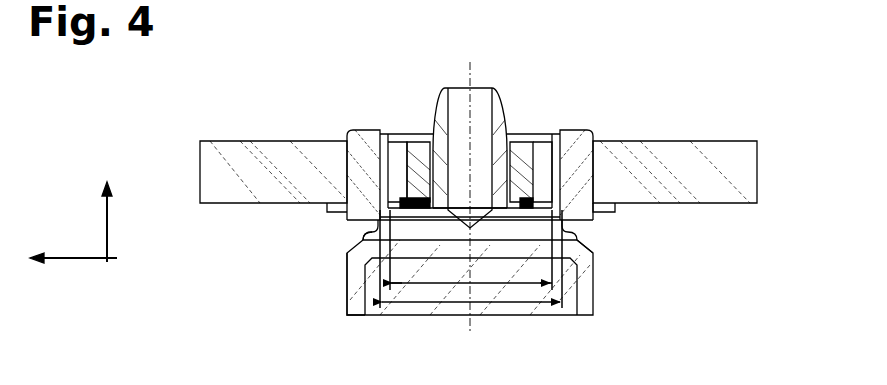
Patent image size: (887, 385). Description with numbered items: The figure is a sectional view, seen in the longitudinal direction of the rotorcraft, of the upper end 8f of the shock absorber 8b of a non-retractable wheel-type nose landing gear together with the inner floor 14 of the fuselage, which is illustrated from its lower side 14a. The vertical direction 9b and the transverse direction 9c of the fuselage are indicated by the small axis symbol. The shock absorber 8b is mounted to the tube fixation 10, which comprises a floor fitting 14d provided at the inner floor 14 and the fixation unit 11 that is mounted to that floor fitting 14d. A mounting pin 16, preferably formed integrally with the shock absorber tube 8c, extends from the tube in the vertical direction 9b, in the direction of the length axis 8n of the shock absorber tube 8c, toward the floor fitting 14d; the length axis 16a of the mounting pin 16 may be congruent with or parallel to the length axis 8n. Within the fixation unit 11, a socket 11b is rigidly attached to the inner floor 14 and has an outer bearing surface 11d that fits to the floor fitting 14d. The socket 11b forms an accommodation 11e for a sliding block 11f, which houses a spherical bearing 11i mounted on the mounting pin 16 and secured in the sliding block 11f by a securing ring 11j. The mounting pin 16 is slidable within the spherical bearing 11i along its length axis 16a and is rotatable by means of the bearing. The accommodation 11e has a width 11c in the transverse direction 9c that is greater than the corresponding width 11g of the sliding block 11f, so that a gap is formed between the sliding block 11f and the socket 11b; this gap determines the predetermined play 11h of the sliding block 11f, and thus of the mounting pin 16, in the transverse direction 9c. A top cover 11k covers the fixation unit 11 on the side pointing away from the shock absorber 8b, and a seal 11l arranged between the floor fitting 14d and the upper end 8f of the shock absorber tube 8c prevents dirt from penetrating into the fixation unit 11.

The shock absorber 8b is at (615, 293).
The shock absorber tube 8c is at (358, 292).
The upper end 8f is at (592, 244).
The length axis 8n is at (480, 88).
The vertical direction 9b is at (107, 238).
The transverse direction 9c is at (68, 260).
The tube fixation 10 is at (558, 107).
The fixation unit 11 is at (381, 117).
The socket 11b is at (579, 149).
The width 11c is at (500, 303).
The outer bearing surface 11d is at (345, 172).
The accommodation 11e is at (560, 187).
The sliding block 11f is at (396, 156).
The width 11g is at (425, 284).
The predetermined play 11h is at (556, 152).
The spherical bearing 11i is at (424, 157).
The securing ring 11j is at (535, 196).
The top cover 11k is at (367, 128).
The seal 11l is at (368, 230).
The inner floor 14 is at (223, 150).
The lower side 14a is at (728, 212).
The floor fitting 14d is at (602, 166).
The mounting pin 16 is at (437, 100).
The length axis 16a is at (468, 141).